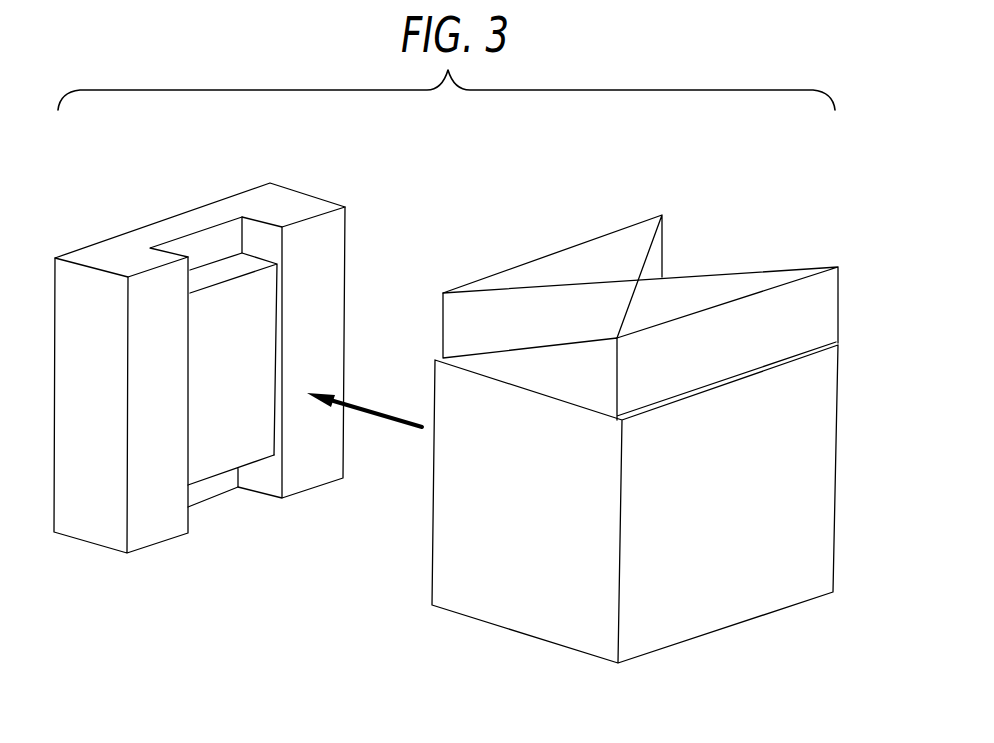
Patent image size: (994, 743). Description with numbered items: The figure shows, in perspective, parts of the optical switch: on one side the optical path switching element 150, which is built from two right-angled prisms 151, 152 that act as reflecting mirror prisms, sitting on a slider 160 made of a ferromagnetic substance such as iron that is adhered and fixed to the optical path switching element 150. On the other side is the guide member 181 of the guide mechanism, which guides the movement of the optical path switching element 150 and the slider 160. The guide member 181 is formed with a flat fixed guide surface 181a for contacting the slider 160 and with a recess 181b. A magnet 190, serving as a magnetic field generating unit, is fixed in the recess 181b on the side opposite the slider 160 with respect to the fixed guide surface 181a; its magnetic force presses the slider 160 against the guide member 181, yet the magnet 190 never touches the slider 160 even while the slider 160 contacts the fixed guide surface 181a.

The optical path switching element 150 is at (635, 414).
The right-angled prism 151 is at (597, 243).
The right-angled prism 152 is at (763, 278).
The slider 160 is at (728, 612).
The guide member 181 is at (212, 344).
The fixed guide surface 181a is at (308, 484).
The recess 181b is at (222, 235).
The magnet 190 is at (218, 468).